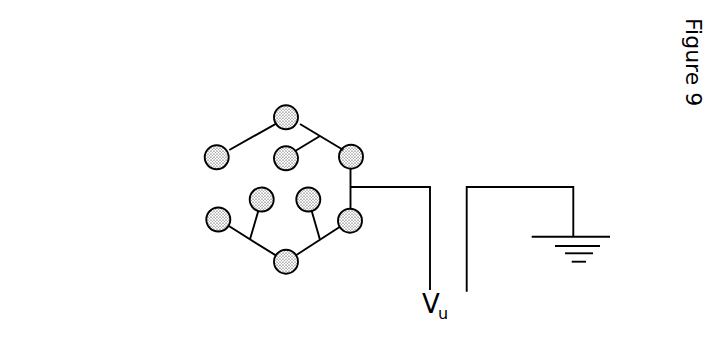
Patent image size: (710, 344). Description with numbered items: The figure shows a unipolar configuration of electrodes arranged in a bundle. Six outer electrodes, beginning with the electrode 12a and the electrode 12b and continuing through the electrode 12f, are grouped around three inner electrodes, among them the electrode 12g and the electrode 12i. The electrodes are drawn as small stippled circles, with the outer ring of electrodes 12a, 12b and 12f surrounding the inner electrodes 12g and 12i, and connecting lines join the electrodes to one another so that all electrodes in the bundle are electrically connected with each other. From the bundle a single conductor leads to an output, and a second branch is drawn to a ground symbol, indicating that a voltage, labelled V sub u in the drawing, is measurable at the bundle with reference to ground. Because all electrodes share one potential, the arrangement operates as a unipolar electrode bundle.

The electrode 12a is at (216, 155).
The electrode 12b is at (289, 110).
The electrode 12g is at (281, 160).
The electrode 12i is at (250, 195).
The electrode 12f is at (209, 222).